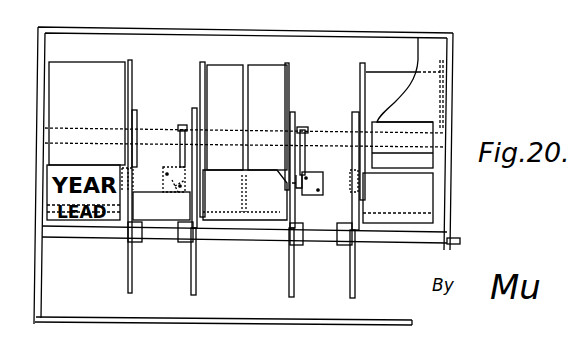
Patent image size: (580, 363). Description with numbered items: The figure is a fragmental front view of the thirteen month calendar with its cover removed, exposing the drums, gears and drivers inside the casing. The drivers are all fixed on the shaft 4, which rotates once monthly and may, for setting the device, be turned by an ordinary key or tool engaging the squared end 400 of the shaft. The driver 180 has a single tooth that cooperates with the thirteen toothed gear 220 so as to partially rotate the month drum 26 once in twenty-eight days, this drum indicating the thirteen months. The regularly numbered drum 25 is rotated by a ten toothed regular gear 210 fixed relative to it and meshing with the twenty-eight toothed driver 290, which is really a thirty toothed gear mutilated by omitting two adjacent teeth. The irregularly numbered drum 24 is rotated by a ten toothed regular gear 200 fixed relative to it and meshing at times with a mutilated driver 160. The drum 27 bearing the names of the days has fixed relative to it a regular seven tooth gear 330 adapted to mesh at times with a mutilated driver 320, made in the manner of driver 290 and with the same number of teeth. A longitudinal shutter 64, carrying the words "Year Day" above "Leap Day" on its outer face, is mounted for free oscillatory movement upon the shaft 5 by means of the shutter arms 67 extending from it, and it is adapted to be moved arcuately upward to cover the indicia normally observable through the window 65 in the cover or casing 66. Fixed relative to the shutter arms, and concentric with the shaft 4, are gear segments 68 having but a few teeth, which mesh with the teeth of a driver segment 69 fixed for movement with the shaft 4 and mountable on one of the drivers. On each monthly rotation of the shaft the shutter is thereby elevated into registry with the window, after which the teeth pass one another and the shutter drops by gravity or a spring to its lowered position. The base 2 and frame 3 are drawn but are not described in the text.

The base plate 2 is at (238, 322).
The frame 3 is at (40, 268).
The shaft 4 is at (323, 241).
The shaft 5 is at (327, 132).
The irregularly numbered drum 24 is at (222, 65).
The regularly numbered drum 25 is at (262, 67).
The drum 26 is at (395, 72).
The drum 27 is at (90, 63).
The shutter 64 is at (428, 190).
The window 65 is at (428, 127).
The cover or casing 66 is at (420, 100).
The shutter arms 67 is at (180, 152).
The gear segments 68 is at (175, 164).
The driver segment 69 is at (172, 192).
The mutilated driver 160 is at (196, 280).
The driver 180 is at (355, 288).
The ten toothed regular gear 200 is at (193, 108).
The ten toothed regular gear 210 is at (293, 112).
The thirteen toothed gear 220 is at (355, 112).
The twenty-eight toothed driver 290 is at (293, 292).
The mutilated driver 320 is at (132, 270).
The seven tooth gear 330 is at (133, 110).
The squared end 400 is at (460, 241).